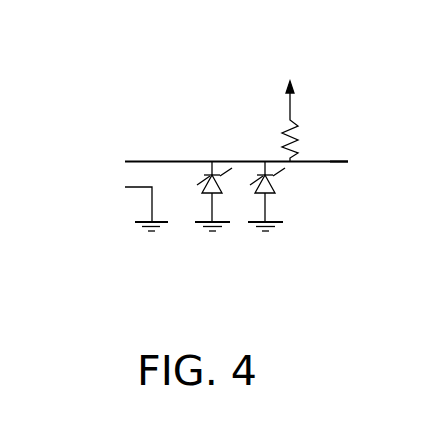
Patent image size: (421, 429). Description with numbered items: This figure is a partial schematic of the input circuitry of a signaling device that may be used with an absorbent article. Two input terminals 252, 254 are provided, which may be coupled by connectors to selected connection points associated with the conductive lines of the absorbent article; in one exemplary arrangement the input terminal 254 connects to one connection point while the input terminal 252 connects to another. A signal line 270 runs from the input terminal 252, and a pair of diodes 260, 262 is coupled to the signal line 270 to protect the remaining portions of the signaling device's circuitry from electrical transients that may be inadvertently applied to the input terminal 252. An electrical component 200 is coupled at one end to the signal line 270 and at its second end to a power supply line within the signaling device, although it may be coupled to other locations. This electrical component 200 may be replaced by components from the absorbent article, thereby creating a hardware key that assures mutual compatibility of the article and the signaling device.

The input terminal 252 is at (120, 166).
The electrical component 200 is at (295, 132).
The signal line 270 is at (328, 160).
The input terminal 254 is at (119, 182).
The diode 260 is at (222, 197).
The diode 262 is at (271, 197).